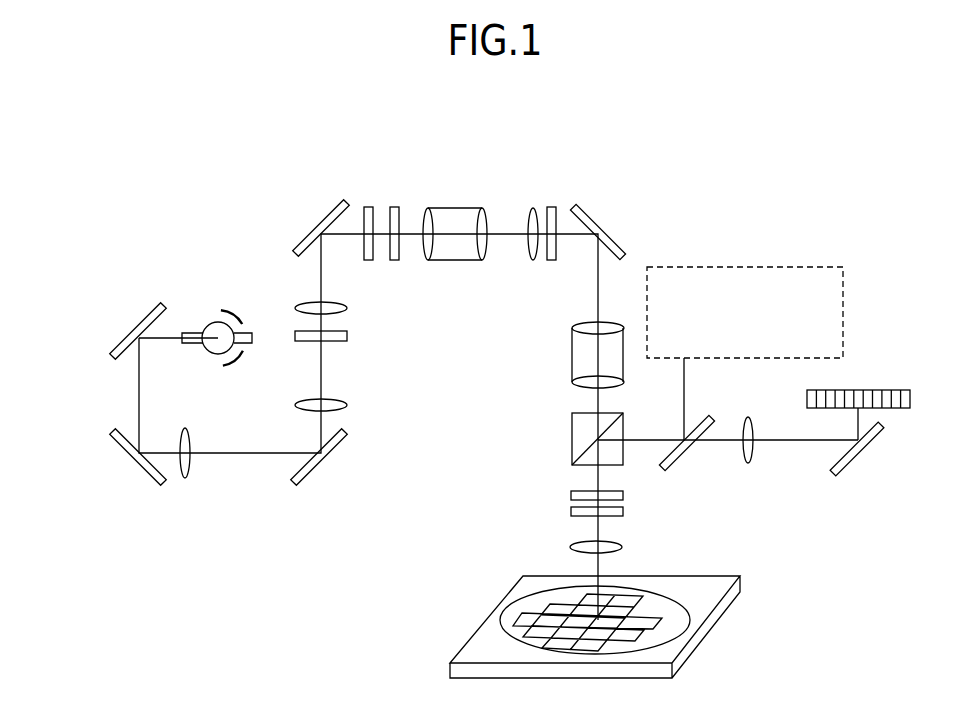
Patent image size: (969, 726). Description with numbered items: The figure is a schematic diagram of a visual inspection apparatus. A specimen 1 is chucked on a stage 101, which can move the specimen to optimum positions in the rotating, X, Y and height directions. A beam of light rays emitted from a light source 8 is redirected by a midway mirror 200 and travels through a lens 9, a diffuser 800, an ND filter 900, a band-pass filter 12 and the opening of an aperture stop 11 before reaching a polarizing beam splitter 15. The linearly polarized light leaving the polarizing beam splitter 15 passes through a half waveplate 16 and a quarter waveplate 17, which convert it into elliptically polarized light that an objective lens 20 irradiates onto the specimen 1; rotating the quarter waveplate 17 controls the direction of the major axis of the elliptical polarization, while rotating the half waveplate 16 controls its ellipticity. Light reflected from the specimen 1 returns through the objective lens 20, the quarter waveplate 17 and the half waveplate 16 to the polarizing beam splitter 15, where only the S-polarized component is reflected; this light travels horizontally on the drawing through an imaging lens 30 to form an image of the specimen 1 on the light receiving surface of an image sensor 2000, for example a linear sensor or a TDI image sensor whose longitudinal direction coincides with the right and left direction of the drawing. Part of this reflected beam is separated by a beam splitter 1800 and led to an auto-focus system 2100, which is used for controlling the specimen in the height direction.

The specimen 1 is at (520, 606).
The light source 8 is at (210, 307).
The lens 9 is at (352, 308).
The aperture stop 11 is at (556, 207).
The band-pass filter 12 is at (400, 205).
The polarizing beam splitter 15 is at (562, 433).
The half waveplate 16 is at (570, 492).
The quarter waveplate 17 is at (570, 515).
The objective lens 20 is at (623, 548).
The imaging lens 30 is at (752, 463).
The stage 101 is at (482, 648).
The mirror 200 is at (140, 322).
The diffuser 800 is at (352, 336).
The ND filter 900 is at (363, 207).
The beam splitter 1800 is at (678, 460).
The image sensor 2000 is at (863, 388).
The auto-focus system 2100 is at (717, 267).